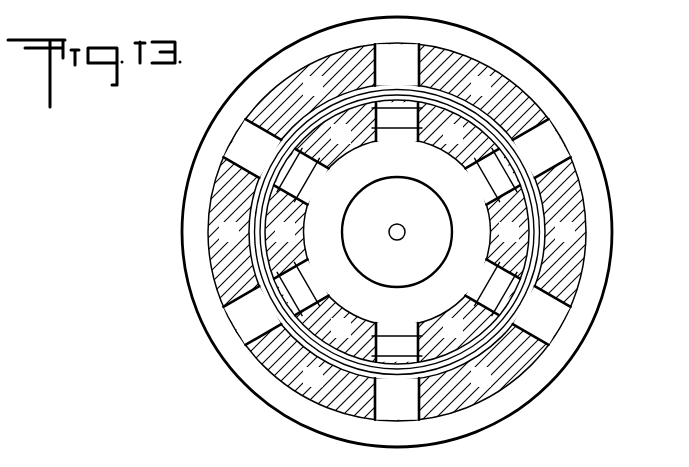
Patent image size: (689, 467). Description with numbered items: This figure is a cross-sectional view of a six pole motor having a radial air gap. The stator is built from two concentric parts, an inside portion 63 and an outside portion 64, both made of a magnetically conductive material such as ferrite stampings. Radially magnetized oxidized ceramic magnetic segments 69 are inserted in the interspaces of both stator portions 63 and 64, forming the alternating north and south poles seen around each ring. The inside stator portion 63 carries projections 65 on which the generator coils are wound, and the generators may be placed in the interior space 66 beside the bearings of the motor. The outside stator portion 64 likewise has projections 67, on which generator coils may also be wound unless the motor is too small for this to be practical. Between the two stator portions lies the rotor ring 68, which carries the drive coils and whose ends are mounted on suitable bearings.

The inside portion of the stator 63 is at (470, 185).
The outside portion of the stator 64 is at (600, 198).
The projections on the inside stator portion 65 is at (492, 286).
The interior space 66 is at (472, 243).
The projections of the outside stator portion 67 is at (545, 323).
The rotor ring 68 is at (490, 337).
The oxidized ceramic magnetic segments 69 is at (473, 130).